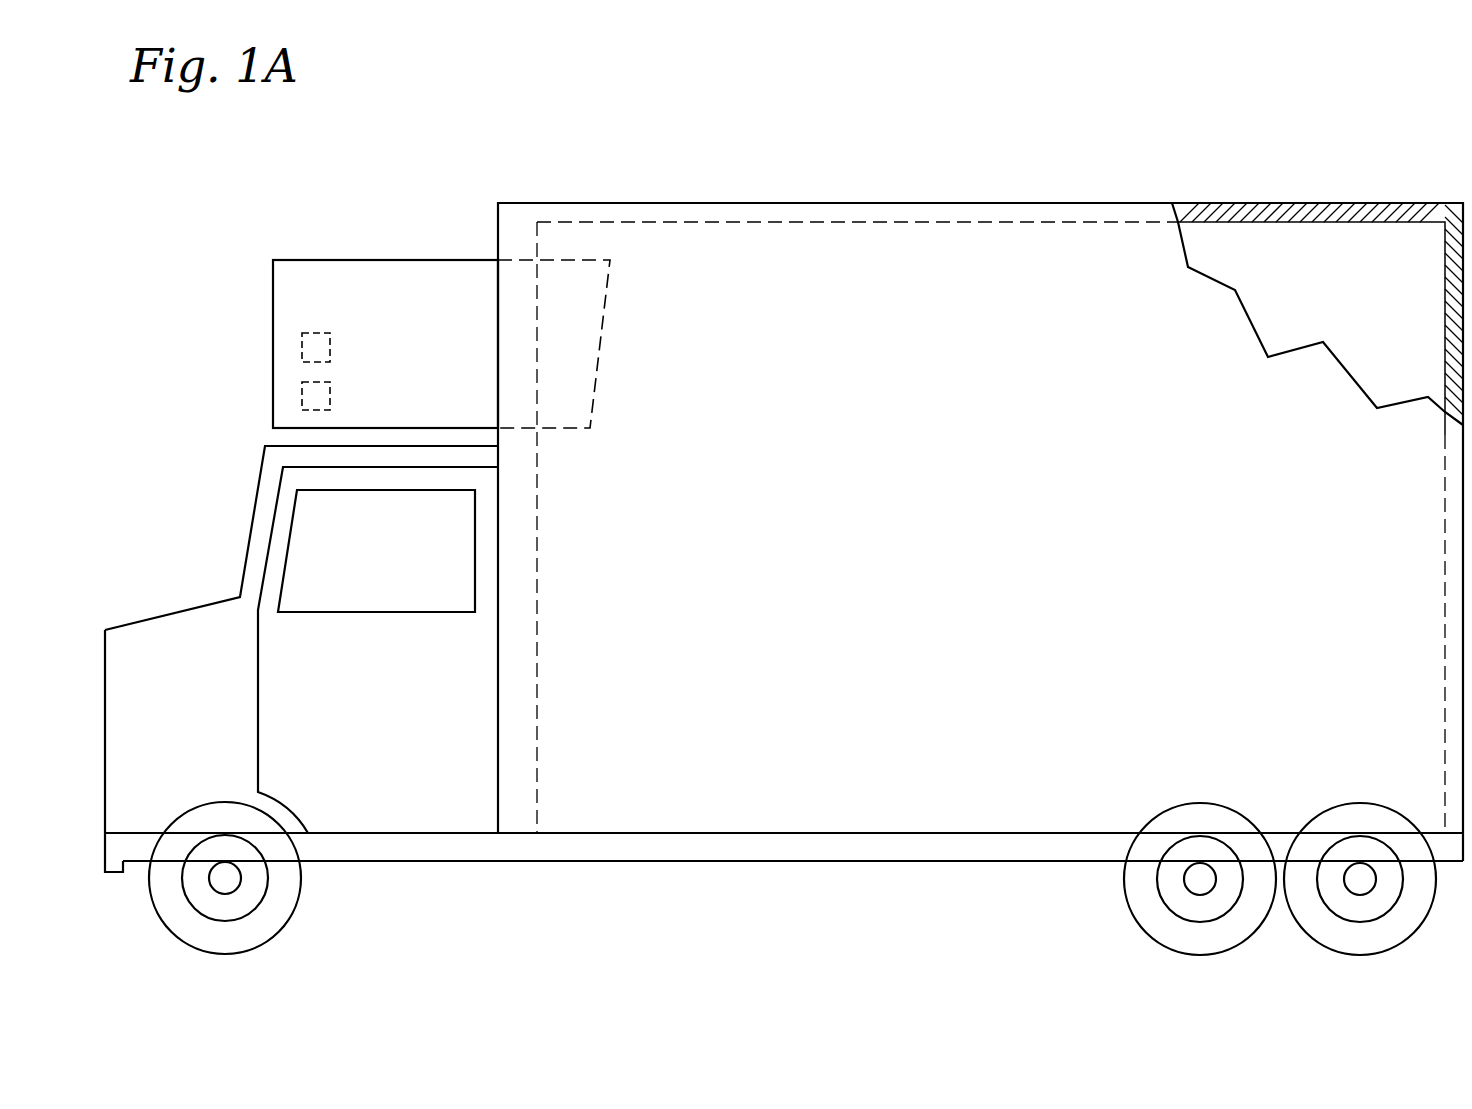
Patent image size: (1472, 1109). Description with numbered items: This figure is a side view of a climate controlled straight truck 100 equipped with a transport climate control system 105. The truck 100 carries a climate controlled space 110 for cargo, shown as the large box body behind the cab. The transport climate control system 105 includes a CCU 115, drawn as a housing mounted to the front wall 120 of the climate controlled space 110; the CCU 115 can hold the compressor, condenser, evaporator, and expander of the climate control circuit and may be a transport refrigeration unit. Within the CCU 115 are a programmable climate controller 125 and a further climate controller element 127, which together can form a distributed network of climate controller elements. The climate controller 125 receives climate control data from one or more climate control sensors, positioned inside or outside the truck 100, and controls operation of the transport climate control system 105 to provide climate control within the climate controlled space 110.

The climate controlled straight truck 100 is at (1050, 152).
The transport climate control system 105 is at (437, 205).
The climate controlled space 110 is at (1262, 257).
The CCU 115 is at (358, 258).
The front wall 120 is at (537, 283).
The climate controller 125 is at (302, 387).
The climate controller element 127 is at (302, 340).